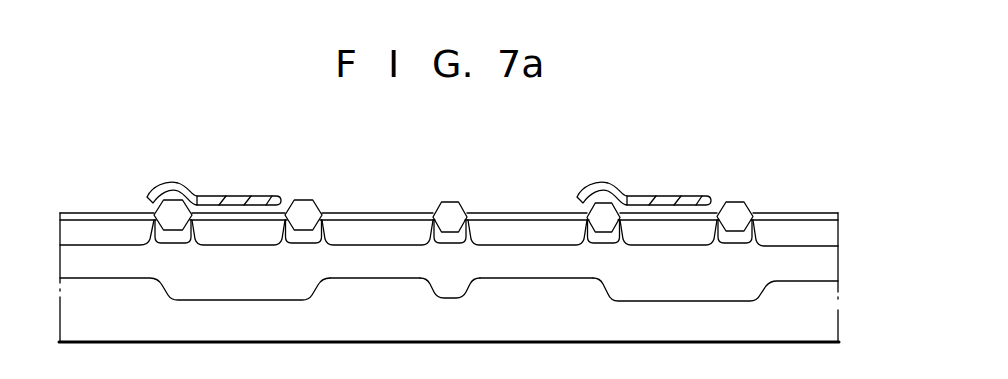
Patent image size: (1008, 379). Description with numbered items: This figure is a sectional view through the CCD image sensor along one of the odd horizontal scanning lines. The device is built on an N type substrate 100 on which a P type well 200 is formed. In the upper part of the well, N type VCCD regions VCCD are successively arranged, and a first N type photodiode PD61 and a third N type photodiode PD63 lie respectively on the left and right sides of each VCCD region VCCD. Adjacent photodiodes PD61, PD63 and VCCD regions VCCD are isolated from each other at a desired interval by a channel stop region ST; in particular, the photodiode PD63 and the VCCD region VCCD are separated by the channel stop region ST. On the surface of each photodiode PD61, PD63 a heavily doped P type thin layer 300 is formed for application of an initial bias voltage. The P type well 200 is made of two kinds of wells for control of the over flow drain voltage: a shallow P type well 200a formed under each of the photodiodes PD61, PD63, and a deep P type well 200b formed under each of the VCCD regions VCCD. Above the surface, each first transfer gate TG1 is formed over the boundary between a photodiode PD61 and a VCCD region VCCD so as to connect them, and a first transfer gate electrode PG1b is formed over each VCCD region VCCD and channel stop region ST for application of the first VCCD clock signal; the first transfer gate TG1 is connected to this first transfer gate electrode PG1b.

The N type substrate 100 is at (823, 310).
The P type well 200 is at (820, 263).
The shallow P type well 200a is at (333, 278).
The deep P type well 200b is at (463, 280).
The P+ type thin layer 300 is at (102, 217).
The first N type photodiode PD61 is at (79, 232).
The third N type photodiode PD63 is at (345, 232).
The N type VCCD region VCCD is at (230, 226).
The channel stop region ST is at (450, 212).
The first transfer gate TG1 is at (170, 181).
The first transfer gate electrode PG1b is at (242, 195).